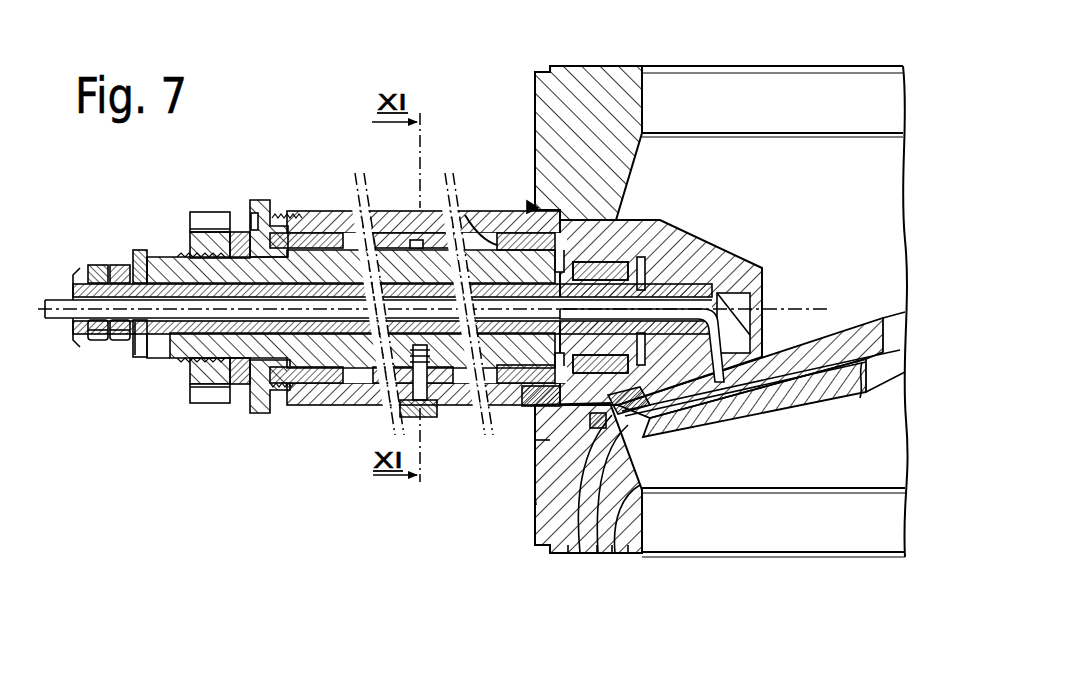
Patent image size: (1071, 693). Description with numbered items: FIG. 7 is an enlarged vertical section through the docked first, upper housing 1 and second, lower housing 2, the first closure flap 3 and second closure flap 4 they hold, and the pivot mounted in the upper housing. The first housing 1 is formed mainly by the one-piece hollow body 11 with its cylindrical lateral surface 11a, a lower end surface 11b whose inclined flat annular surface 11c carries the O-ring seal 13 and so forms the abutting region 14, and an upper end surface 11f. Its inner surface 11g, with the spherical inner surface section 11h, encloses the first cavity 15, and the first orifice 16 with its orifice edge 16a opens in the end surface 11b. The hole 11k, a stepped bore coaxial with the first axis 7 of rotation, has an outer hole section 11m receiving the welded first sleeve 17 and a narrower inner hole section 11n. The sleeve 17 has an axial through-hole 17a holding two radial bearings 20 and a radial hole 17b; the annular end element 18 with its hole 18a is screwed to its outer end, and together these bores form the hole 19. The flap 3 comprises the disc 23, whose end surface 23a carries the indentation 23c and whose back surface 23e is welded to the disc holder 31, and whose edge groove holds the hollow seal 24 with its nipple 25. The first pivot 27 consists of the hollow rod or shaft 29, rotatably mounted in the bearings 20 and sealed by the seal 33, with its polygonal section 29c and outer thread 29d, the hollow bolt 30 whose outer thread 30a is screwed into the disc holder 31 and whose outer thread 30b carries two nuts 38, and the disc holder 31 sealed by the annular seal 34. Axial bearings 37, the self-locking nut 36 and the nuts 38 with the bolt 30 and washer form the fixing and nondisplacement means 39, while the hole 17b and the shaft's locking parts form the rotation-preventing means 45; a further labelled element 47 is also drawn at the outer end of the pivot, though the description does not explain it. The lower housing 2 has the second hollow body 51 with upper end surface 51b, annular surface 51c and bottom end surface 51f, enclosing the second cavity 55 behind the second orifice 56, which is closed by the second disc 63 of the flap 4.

The first upper housing 1 is at (534, 68).
The second lower housing 2 is at (533, 537).
The first closure flap 3 is at (885, 317).
The second closure flap 4 is at (859, 405).
The first axis of rotation 7 is at (44, 298).
The first hollow body 11 is at (535, 104).
The outer lateral surface 11a is at (535, 128).
The end surface 11b is at (537, 442).
The flat annular surface 11c is at (535, 495).
The end surface 11f is at (604, 66).
The inner surface 11g is at (644, 119).
The annular inner surface section 11h is at (650, 165).
The hole 11k is at (538, 188).
The outer cylindrical hole section 11m is at (528, 207).
The inner hole section 11n is at (640, 222).
The seal 13 is at (643, 500).
The abutting region 14 is at (578, 556).
The first cavity 15 is at (832, 103).
The first orifice 16 is at (904, 360).
The first orifice edge 16a is at (874, 385).
The first sleeve 17 is at (407, 211).
The axial through-hole 17a is at (414, 236).
The radial hole 17b is at (378, 402).
The annular end element 18 is at (265, 200).
The hole 18a is at (239, 231).
The hole 19 is at (353, 388).
The radial bearing 20 is at (356, 210).
The disc 23 is at (838, 330).
The end surface 23a is at (665, 435).
The indentation 23c is at (812, 412).
The back surface 23e is at (860, 315).
The hollow seal 24 is at (642, 422).
The nipple 25 is at (745, 436).
The first pivot 27 is at (72, 318).
The hollow rod or hollow shaft 29 is at (168, 256).
The polygonal section 29c is at (162, 357).
The outer thread 29d is at (173, 373).
The hollow bolt 30 is at (72, 275).
The outer thread 30a is at (742, 238).
The outer thread 30b is at (73, 282).
The disc holder 31 is at (752, 263).
The seal 33 is at (565, 404).
The annular seal 34 is at (643, 190).
The self-locking nut 36 is at (208, 403).
The axial bearing 37 is at (672, 243).
The nuts 38 is at (117, 340).
The detachable fixing and nondisplacement means 39 is at (100, 342).
The rotation-preventing means 45 is at (432, 414).
The pipe 47 is at (48, 335).
The second hollow body 51 is at (613, 545).
The upper end surface 51b is at (596, 414).
The annular surface 51c is at (598, 556).
The end surface 51f is at (628, 558).
The second cavity 55 is at (883, 540).
The second orifice 56 is at (904, 262).
The second disc 63 is at (812, 488).